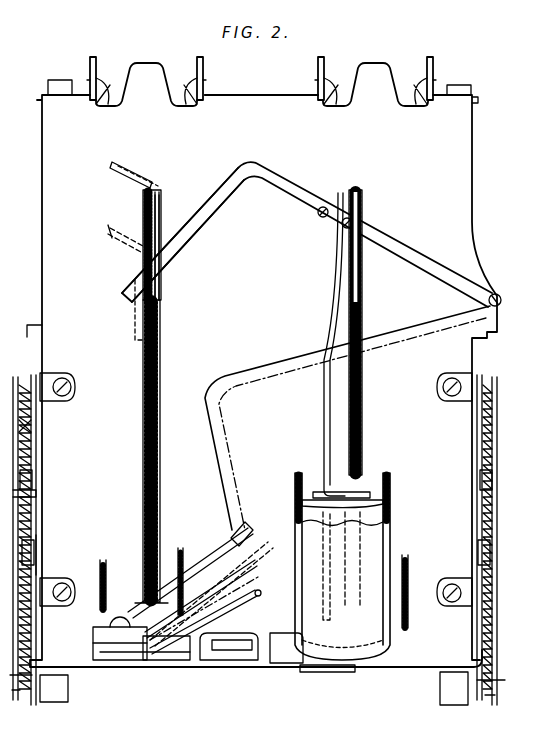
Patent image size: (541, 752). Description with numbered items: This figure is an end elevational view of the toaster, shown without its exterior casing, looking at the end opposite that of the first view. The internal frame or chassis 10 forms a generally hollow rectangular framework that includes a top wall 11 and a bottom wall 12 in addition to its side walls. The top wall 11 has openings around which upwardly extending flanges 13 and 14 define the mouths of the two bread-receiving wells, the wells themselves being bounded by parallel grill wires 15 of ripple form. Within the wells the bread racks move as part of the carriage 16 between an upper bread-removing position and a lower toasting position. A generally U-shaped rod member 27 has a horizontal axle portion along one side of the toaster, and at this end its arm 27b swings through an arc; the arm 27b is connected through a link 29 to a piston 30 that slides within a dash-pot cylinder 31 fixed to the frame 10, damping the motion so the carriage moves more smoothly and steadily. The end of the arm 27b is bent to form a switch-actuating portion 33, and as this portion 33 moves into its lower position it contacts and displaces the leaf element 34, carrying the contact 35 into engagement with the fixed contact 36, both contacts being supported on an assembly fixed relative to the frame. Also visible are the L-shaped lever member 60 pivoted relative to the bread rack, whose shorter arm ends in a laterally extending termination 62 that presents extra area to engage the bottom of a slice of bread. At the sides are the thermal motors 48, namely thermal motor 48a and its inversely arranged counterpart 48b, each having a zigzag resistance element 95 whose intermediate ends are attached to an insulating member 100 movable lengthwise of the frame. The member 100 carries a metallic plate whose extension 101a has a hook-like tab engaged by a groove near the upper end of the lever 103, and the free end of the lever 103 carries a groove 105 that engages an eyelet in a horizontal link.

The frame 10 is at (40, 172).
The top wall 11 is at (256, 93).
The bottom wall 12 is at (187, 668).
The upwardly extending flange 13 is at (90, 62).
The upwardly extending flange 14 is at (145, 70).
The grill wires 15 is at (102, 88).
The carriage 16 is at (108, 226).
The U-shaped rod member 27 is at (500, 297).
The arm 27b is at (273, 360).
The link 29 is at (322, 428).
The piston 30 is at (374, 490).
The dash-pot cylinder 31 is at (384, 560).
The switch-actuating portion 33 is at (172, 230).
The leaf element 34 is at (226, 543).
The contact 35 is at (258, 566).
The fixed contact 36 is at (260, 597).
The thermal motor 48 is at (38, 378).
The thermal motor 48a is at (30, 385).
The thermal motor 48b is at (498, 380).
The L-shaped lever member 60 is at (144, 222).
The laterally extending termination 62 is at (130, 160).
The resistance element 95 is at (27, 402).
The insulating member 100 is at (34, 432).
The extension 101a is at (26, 485).
The lever 103 is at (22, 530).
The groove 105 is at (16, 680).